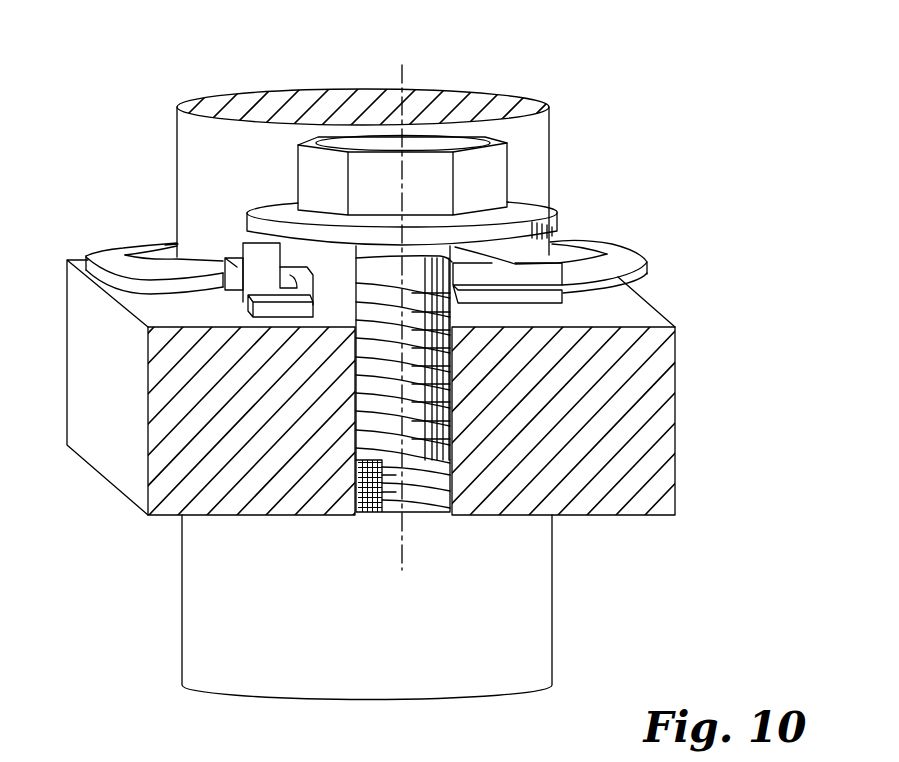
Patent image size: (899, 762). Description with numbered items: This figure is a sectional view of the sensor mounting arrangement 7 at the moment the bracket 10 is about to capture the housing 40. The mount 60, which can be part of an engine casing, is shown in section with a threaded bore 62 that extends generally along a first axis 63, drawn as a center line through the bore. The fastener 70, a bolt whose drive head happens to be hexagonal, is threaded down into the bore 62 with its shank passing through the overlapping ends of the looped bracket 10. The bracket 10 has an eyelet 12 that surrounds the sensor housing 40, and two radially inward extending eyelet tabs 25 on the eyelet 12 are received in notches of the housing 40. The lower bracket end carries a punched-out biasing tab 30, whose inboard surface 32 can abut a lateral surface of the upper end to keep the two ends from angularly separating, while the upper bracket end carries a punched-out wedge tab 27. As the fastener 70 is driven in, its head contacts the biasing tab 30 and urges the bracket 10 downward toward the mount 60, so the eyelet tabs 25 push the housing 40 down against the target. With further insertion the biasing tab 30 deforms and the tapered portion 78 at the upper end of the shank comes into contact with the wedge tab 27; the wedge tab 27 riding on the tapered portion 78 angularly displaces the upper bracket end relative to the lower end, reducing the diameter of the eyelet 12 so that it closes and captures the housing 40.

The arrangement for mounting a sensor 7 is at (274, 72).
The bracket 10 is at (656, 261).
The eyelet 12 is at (102, 250).
The eyelet tabs 25 is at (172, 245).
The wedge tab 27 is at (479, 256).
The biasing tab 30 is at (252, 273).
The inboard surface 32 is at (293, 284).
The housing 40 is at (550, 143).
The mount 60 is at (677, 404).
The threaded bore 62 is at (367, 507).
The first axis 63 is at (407, 513).
The fastener 70 is at (440, 143).
The tapered portion 78 is at (352, 245).